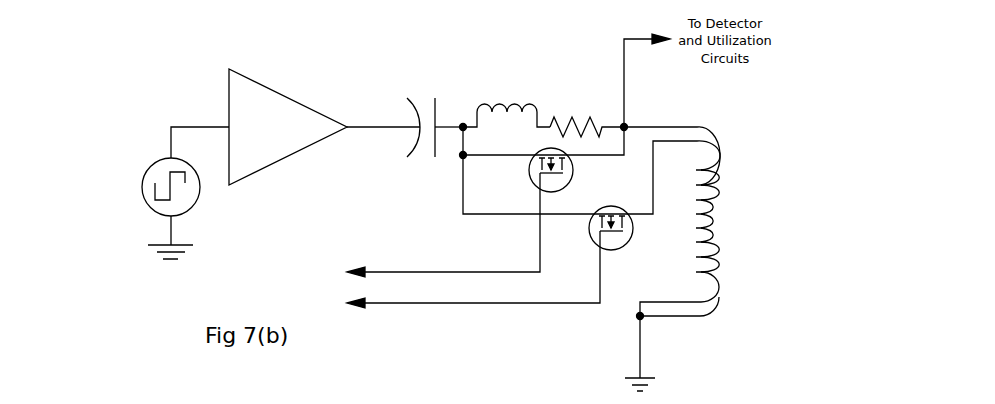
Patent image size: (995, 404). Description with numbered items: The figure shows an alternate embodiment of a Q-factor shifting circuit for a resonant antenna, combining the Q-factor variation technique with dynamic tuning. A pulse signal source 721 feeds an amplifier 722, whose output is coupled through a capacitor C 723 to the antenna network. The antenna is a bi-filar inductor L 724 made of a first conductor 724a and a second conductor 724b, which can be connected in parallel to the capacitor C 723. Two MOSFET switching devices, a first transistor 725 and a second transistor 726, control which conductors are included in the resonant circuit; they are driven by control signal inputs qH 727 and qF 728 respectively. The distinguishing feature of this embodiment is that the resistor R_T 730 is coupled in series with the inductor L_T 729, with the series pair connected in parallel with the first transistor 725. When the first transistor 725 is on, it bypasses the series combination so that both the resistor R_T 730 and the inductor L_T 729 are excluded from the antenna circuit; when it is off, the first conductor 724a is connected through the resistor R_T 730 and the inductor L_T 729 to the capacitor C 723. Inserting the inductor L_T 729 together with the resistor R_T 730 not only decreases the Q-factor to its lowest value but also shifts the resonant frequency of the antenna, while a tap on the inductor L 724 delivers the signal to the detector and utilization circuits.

The pulse signal source 721 is at (142, 163).
The amplifier 722 is at (287, 83).
The coupling capacitor C 723 is at (420, 85).
The inductor L 724 is at (719, 193).
The first inductor section / tap 724a is at (730, 145).
The second inductor section 724b is at (730, 203).
The transistor Q1 725 is at (523, 171).
The transistor Q2 726 is at (587, 242).
The control signal qH input 727 is at (338, 272).
The control signal qF input 728 is at (322, 317).
The inductor L_T 729 is at (483, 98).
The resistor R_T 730 is at (587, 118).